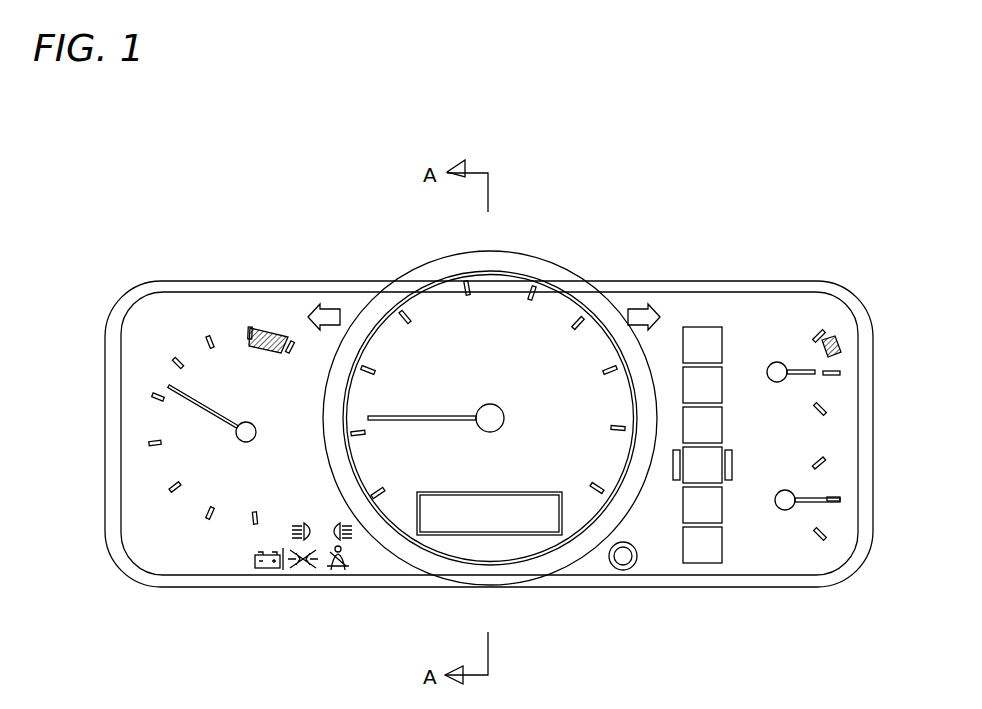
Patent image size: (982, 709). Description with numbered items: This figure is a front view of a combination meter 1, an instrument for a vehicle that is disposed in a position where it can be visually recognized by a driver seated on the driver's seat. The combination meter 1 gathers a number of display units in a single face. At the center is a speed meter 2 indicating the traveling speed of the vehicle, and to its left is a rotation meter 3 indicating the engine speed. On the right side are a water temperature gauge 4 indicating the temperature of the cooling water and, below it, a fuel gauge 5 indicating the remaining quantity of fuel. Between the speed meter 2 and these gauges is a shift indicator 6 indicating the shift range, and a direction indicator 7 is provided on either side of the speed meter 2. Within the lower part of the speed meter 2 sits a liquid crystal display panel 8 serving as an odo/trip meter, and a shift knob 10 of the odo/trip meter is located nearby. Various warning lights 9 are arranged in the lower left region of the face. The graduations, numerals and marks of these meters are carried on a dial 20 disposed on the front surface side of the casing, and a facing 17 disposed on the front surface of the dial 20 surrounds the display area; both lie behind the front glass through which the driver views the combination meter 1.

The combination meter 1 is at (707, 281).
The speed meter 2 is at (490, 417).
The rotation meter 3 is at (222, 359).
The water temperature gauge 4 is at (786, 340).
The fuel gauge 5 is at (788, 527).
The shift indicator 6 is at (707, 563).
The direction indicator 7 is at (330, 306).
The liquid crystal display panel 8 is at (462, 522).
The warning lights 9 is at (308, 565).
The shift knob 10 is at (623, 570).
The facing 17 is at (170, 581).
The dial 20 is at (265, 306).